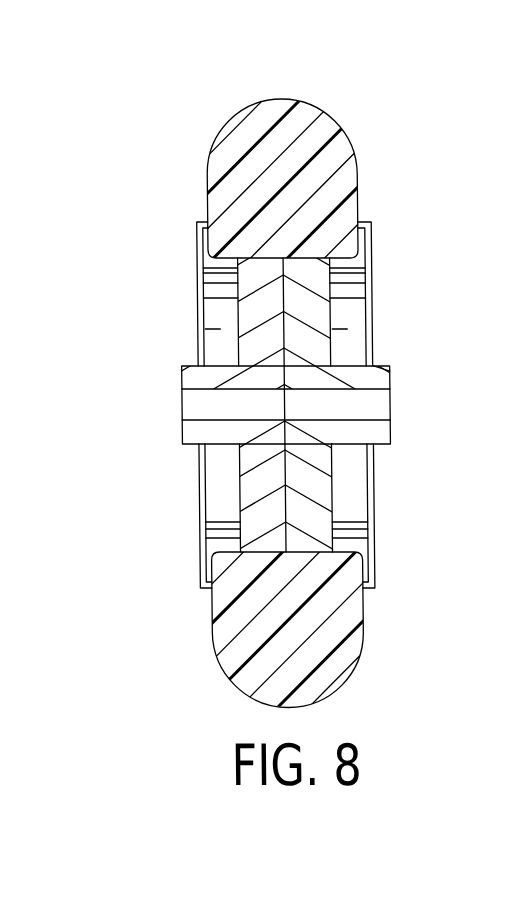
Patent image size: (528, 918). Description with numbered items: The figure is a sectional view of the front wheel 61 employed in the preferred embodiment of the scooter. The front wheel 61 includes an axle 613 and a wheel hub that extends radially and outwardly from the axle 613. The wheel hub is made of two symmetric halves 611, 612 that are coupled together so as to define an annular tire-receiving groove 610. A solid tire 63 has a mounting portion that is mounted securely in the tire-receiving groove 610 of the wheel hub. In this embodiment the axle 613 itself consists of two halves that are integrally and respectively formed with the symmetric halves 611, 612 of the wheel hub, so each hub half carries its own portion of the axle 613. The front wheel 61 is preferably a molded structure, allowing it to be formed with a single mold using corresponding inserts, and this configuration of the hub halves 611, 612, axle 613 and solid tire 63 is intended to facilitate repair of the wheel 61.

The front wheel 61 is at (372, 297).
The tire-receiving groove 610 is at (366, 218).
The symmetric half of the wheel hub 611 is at (255, 330).
The symmetric half of the wheel hub 612 is at (316, 490).
The axle 613 is at (185, 447).
The solid tire 63 is at (250, 152).